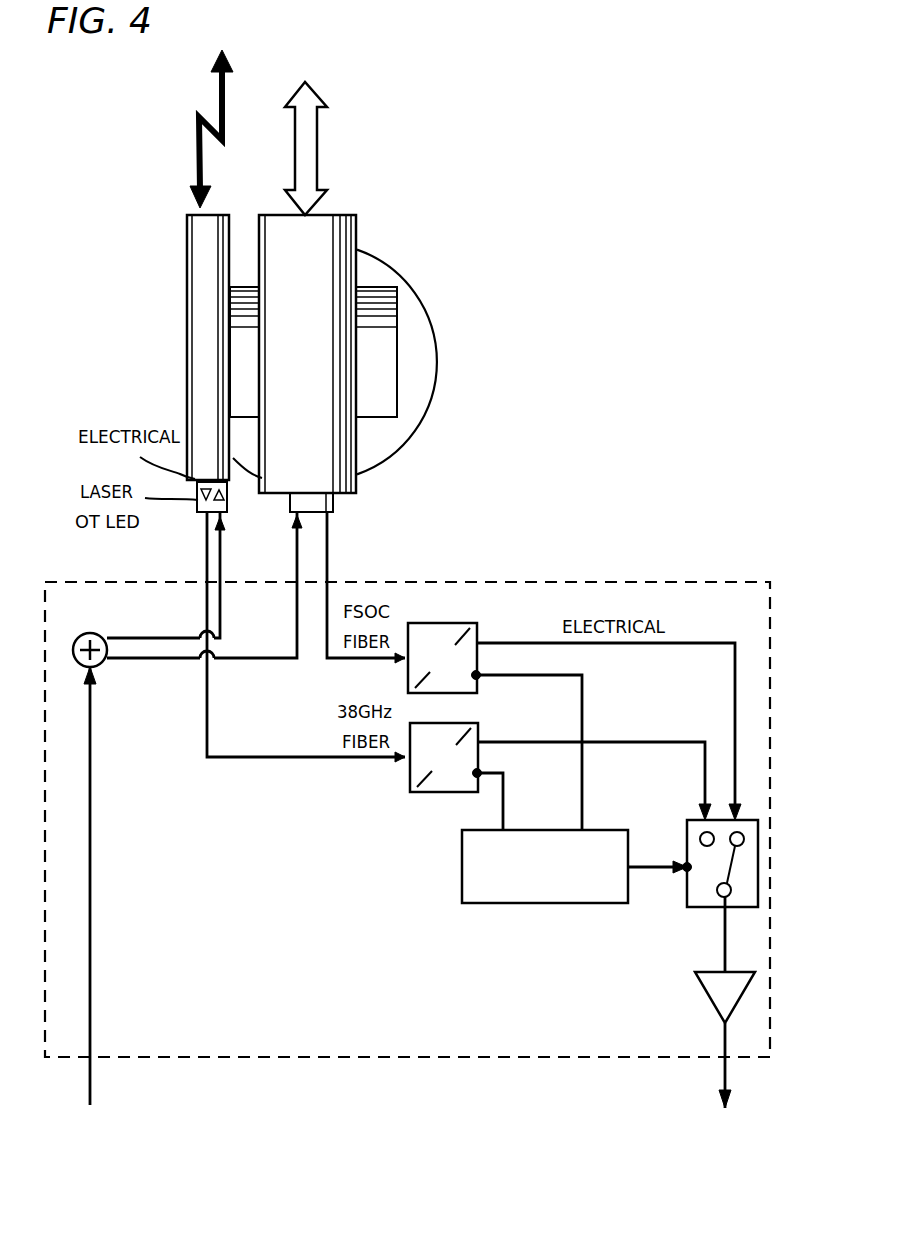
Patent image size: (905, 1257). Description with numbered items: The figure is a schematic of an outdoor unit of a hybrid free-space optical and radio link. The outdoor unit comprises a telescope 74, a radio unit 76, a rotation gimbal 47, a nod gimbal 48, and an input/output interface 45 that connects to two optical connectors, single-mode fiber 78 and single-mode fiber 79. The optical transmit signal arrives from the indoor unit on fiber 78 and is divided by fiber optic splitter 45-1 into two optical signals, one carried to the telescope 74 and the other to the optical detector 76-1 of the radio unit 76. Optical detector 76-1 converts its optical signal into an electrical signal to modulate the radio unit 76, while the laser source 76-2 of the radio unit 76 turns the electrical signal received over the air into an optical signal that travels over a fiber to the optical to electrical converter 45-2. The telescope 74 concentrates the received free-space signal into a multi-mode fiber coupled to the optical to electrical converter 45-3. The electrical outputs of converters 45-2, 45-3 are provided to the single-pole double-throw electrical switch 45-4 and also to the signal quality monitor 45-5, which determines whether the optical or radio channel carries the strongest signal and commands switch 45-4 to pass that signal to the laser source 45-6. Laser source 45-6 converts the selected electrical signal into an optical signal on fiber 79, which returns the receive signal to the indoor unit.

The telescope 74 is at (343, 261).
The radio unit 76 is at (195, 264).
The rotation gimbal 47 is at (418, 307).
The nod gimbal 48 is at (387, 360).
The optical detector 76-1 is at (225, 500).
The laser source 76-2 is at (200, 507).
The input/output interface 45 is at (568, 582).
The fiber optic splitter 45-1 is at (80, 633).
The optical to electrical converter 45-2 is at (413, 792).
The optical to electrical converter 45-3 is at (445, 623).
The single-pole double-throw electrical switch 45-4 is at (698, 900).
The signal quality monitor 45-5 is at (475, 897).
The laser source 45-6 is at (710, 1005).
The single-mode fiber 78 is at (97, 1088).
The single-mode fiber 79 is at (720, 1072).